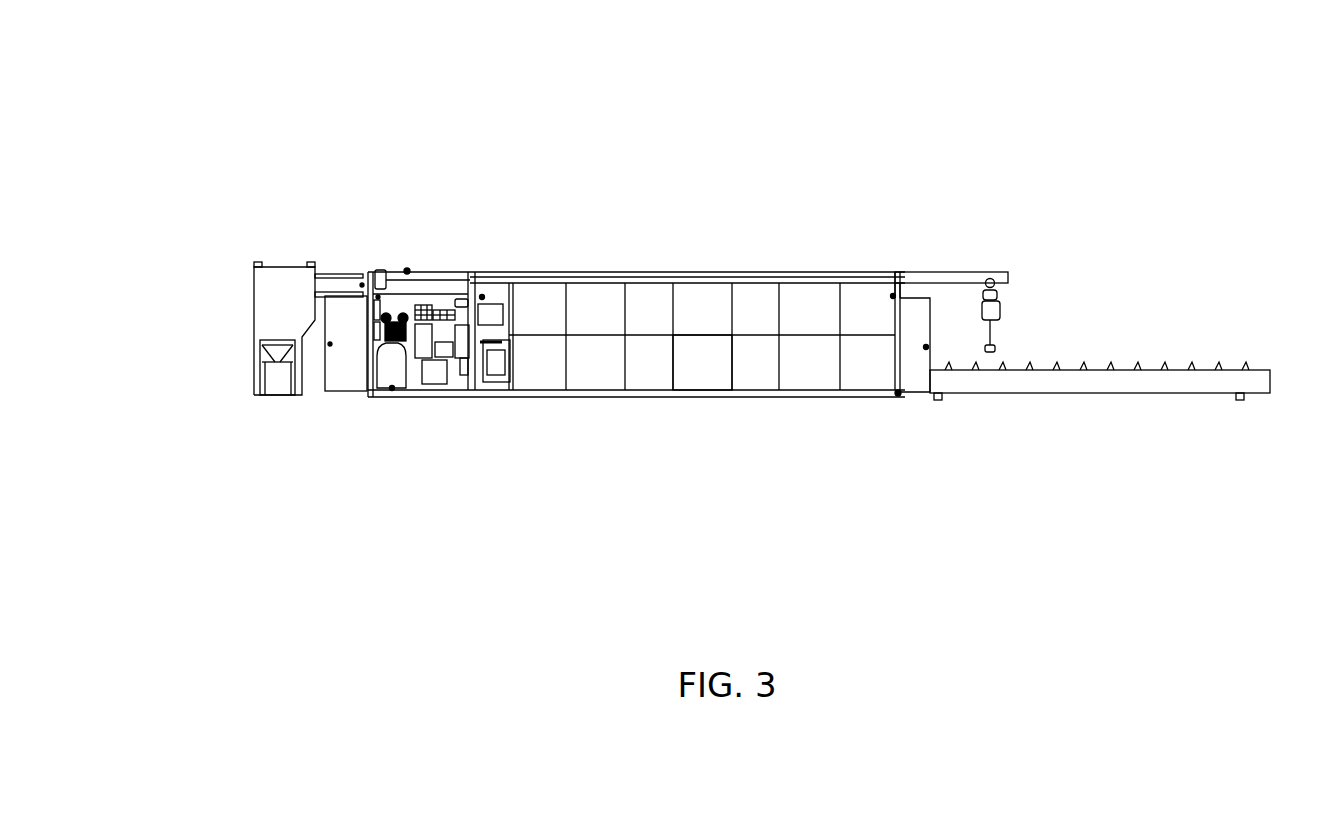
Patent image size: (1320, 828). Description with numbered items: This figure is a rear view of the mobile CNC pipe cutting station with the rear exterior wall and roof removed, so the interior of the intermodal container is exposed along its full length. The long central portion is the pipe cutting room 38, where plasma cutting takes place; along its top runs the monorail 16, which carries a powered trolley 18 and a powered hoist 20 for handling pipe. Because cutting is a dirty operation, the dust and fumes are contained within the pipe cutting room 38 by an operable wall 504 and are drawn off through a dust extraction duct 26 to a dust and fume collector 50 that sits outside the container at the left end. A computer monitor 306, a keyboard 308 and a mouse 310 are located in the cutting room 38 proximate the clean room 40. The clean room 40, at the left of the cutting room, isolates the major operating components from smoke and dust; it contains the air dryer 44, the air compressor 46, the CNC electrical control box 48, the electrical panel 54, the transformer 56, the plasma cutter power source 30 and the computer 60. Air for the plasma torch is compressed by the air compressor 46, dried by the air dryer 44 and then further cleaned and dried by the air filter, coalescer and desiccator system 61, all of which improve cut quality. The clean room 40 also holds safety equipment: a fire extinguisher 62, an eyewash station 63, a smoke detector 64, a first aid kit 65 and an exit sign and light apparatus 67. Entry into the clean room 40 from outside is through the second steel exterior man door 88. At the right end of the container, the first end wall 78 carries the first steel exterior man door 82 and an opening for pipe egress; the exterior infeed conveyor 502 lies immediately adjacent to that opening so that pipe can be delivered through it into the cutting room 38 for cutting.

The monorail 16 is at (1034, 179).
The powered trolley 18 is at (1048, 244).
The powered hoist 20 is at (1113, 247).
The dust extraction duct 26 is at (458, 253).
The plasma cutter power source 30 is at (572, 225).
The pipe cutting room 38 is at (636, 255).
The clean room 40 is at (465, 143).
The air dryer 44 is at (513, 194).
The air compressor 46 is at (320, 397).
The CNC electrical control box 48 is at (322, 434).
The dust and fume collector 50 is at (280, 282).
The electrical panel 54 is at (398, 189).
The transformer 56 is at (350, 407).
The computer 60 is at (522, 256).
The air filter, coalescer and desiccator system 61 is at (523, 206).
The fire extinguisher 62 is at (422, 414).
The eyewash station 63 is at (281, 332).
The smoke detector 64 is at (363, 197).
The first aid kit 65 is at (270, 378).
The exit sign and light apparatus 67 is at (578, 229).
The first end wall 78 is at (941, 216).
The first steel exterior man door 82 is at (994, 244).
The second steel exterior man door 88 is at (266, 329).
The computer monitor 306 is at (436, 425).
The keyboard 308 is at (437, 445).
The mouse 310 is at (443, 465).
The exterior infeed conveyor 502 is at (1100, 425).
The operable wall 504 is at (781, 442).